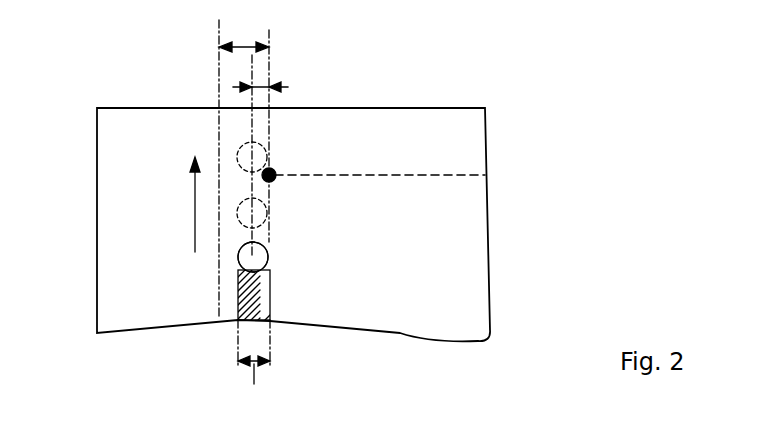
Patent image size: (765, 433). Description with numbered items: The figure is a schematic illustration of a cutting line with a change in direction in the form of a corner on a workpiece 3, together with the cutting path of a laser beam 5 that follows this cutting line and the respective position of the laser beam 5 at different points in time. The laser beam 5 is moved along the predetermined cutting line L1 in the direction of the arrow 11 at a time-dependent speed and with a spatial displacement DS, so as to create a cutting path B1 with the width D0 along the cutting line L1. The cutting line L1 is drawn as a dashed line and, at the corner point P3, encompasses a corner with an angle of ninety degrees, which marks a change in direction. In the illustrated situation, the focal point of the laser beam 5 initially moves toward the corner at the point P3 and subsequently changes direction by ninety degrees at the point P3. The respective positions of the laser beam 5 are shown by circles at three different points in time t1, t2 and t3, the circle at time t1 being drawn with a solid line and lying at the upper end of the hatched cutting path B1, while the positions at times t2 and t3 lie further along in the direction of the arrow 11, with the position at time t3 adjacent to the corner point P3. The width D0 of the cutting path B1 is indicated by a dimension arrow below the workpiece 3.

The workpiece 3 is at (138, 118).
The laser beam 5 is at (238, 258).
The arrow 11 is at (171, 204).
The spatial displacement DS is at (260, 87).
The point in time t3 is at (274, 148).
The corner point P3 is at (276, 173).
The cutting line L1 is at (476, 173).
The point in time t2 is at (282, 212).
The point in time t1 is at (282, 256).
The cutting path B1 is at (240, 303).
The width of the cutting path D0 is at (255, 365).